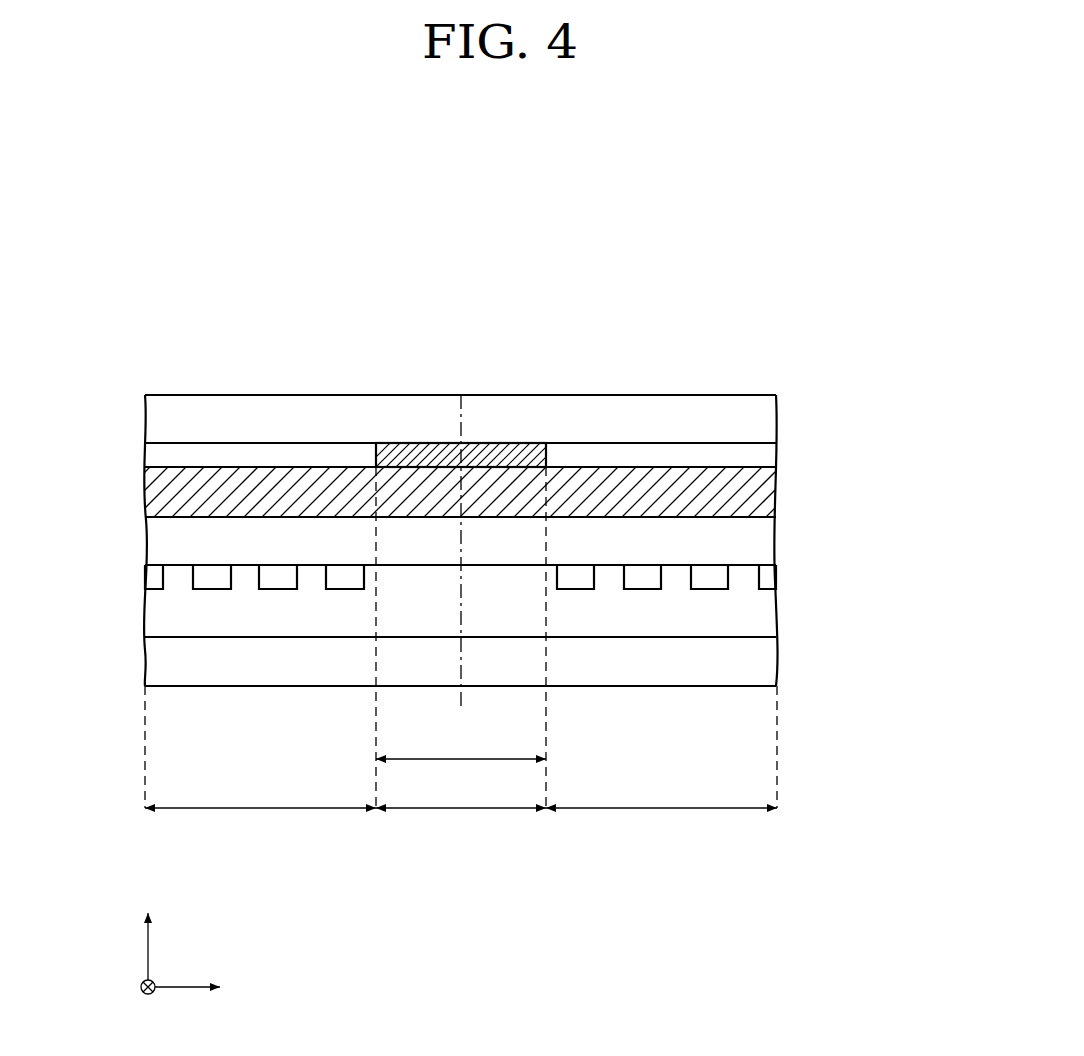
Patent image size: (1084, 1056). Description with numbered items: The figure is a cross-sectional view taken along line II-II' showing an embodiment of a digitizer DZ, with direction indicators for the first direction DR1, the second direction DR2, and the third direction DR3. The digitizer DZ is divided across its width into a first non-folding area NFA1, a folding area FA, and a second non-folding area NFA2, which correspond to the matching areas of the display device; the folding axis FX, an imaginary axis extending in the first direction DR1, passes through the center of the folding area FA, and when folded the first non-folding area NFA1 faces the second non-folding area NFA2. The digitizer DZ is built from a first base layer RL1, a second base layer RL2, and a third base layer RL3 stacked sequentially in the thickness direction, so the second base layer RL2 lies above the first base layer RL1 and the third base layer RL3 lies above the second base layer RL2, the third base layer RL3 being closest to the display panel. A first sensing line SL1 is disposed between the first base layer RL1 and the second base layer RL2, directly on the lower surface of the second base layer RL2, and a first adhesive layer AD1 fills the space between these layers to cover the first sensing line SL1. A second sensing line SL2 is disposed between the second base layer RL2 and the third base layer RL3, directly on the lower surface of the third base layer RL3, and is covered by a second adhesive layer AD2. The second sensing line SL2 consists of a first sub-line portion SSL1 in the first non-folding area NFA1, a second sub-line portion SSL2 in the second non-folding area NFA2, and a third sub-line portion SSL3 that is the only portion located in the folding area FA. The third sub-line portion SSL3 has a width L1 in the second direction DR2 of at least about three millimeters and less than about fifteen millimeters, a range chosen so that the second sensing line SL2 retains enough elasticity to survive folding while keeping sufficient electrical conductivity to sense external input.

The third base layer RL3 is at (768, 413).
The second sensing line SL2 is at (677, 342).
The first sub-line portion SSL1 is at (258, 452).
The third sub-line portion SSL3 is at (424, 452).
The second sub-line portion SSL2 is at (637, 452).
The second adhesive layer AD2 is at (768, 488).
The second base layer RL2 is at (768, 529).
The first sensing line SL1 is at (768, 566).
The first adhesive layer AD1 is at (768, 599).
The first base layer RL1 is at (768, 648).
The digitizer DZ is at (796, 323).
The folding axis FX is at (461, 570).
The width L1 is at (461, 776).
The first non-folding area NFA1 is at (260, 825).
The folding area FA is at (461, 825).
The second non-folding area NFA2 is at (661, 825).
The section line II is at (147, 831).
The section line II' is at (782, 831).
The first direction DR1 is at (152, 1002).
The second direction DR2 is at (213, 989).
The third direction DR3 is at (152, 935).